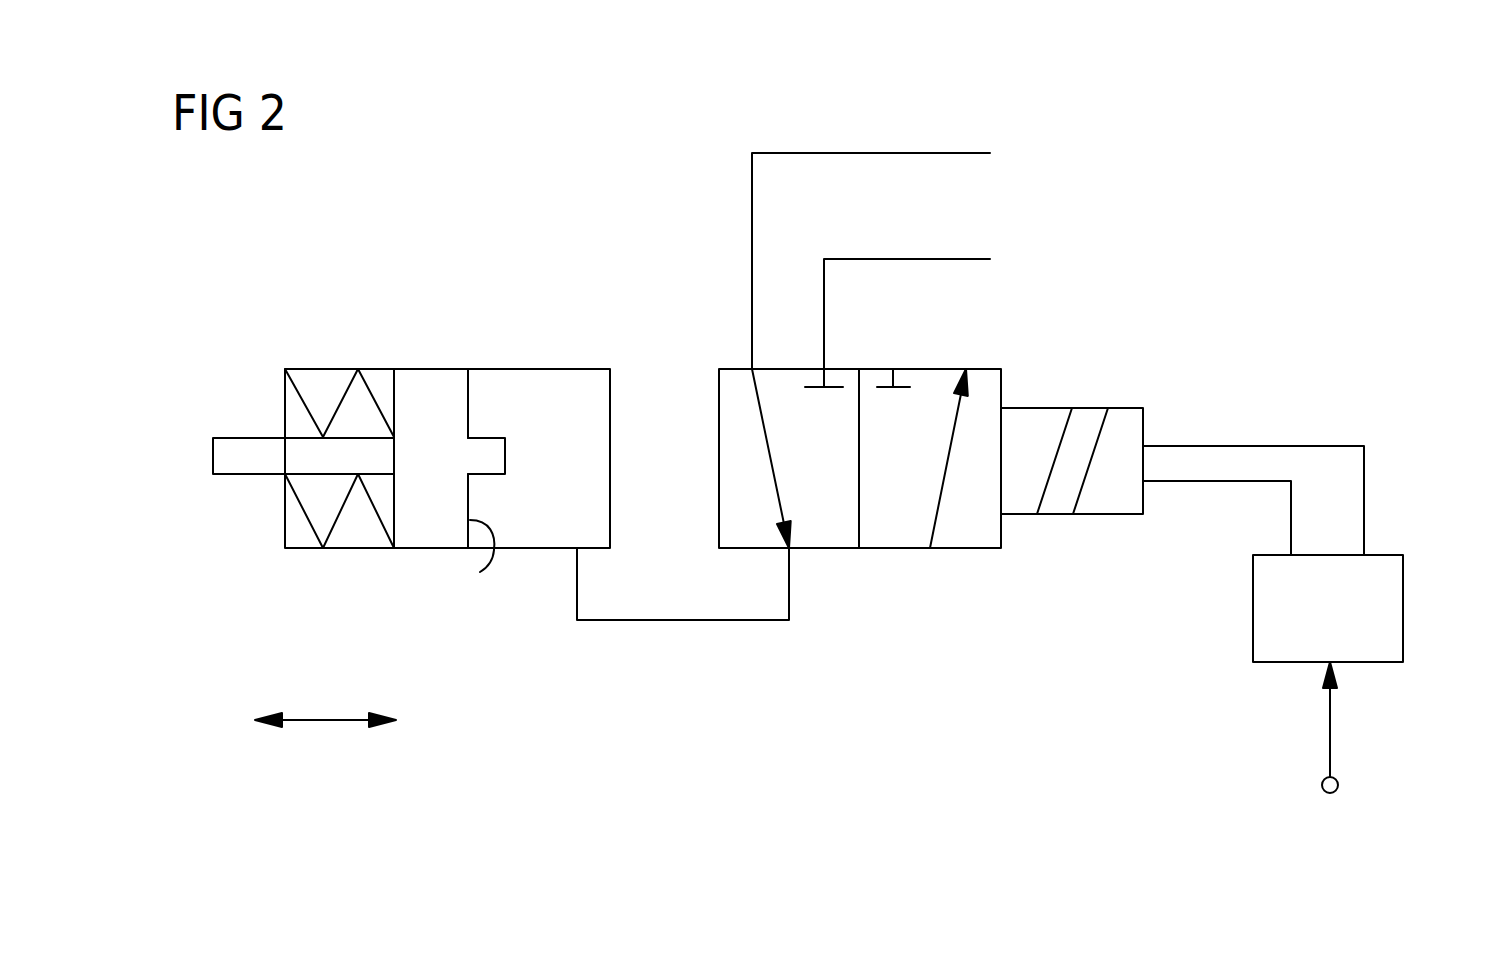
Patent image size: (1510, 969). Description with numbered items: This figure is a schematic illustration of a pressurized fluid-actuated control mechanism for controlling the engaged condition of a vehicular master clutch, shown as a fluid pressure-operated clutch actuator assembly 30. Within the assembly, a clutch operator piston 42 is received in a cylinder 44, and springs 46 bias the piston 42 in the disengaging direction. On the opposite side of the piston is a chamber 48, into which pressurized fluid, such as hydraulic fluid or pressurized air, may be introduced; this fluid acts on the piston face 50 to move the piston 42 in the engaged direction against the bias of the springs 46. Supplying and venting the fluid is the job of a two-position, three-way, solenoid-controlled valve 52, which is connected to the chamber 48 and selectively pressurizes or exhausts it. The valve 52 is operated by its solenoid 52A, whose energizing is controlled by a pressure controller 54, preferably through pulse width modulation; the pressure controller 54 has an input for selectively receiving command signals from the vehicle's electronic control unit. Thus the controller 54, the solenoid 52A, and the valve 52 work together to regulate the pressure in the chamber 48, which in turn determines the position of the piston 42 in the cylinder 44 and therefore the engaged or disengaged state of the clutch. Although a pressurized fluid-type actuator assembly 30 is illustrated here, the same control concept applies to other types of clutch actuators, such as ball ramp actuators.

The clutch actuator assembly 30 is at (1340, 138).
The clutch operator piston 42 is at (437, 425).
The cylinder 44 is at (562, 368).
The springs 46 is at (320, 398).
The chamber 48 is at (555, 480).
The piston face 50 is at (469, 557).
The solenoid-controlled valve 52 is at (901, 602).
The solenoid 52A is at (1043, 430).
The pressure controller 54 is at (1375, 622).